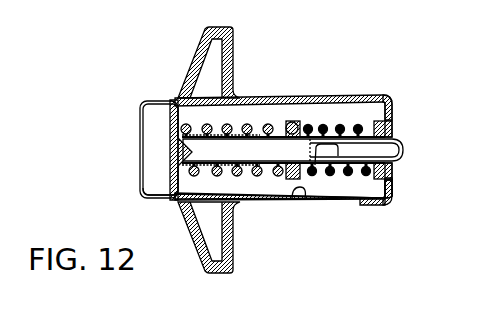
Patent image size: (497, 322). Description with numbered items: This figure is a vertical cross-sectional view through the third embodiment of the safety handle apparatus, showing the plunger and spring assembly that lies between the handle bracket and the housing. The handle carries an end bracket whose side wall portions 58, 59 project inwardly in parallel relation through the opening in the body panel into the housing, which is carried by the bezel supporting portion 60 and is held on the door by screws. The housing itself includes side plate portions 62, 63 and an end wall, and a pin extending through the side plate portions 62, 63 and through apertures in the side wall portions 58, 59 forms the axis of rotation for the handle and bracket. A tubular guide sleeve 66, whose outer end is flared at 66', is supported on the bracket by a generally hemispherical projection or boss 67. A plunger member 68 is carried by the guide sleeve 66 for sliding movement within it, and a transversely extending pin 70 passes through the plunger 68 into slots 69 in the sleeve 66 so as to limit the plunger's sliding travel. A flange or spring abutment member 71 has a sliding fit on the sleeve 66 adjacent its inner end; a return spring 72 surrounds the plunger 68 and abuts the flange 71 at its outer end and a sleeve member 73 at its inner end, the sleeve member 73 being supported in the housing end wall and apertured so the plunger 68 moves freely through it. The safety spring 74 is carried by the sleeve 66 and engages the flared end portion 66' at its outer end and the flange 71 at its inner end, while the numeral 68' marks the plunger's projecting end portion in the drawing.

The side wall portion 58 is at (293, 120).
The side wall portion 59 is at (304, 197).
The bezel supporting portion 60 is at (193, 62).
The side plate portion 62 is at (343, 100).
The side plate portion 63 is at (383, 205).
The tubular guide sleeve 66 is at (217, 236).
The flared outer end portion 66' is at (156, 209).
The hemispherical projection or boss 67 is at (165, 152).
The plunger member 68 is at (378, 100).
The plunger shaft 68' is at (320, 150).
The slots 69 is at (277, 124).
The transversely extending pin 70 is at (338, 176).
The flange or spring abutment member 71 is at (310, 130).
The return spring 72 is at (377, 181).
The sleeve member 73 is at (393, 108).
The safety spring 74 is at (249, 123).